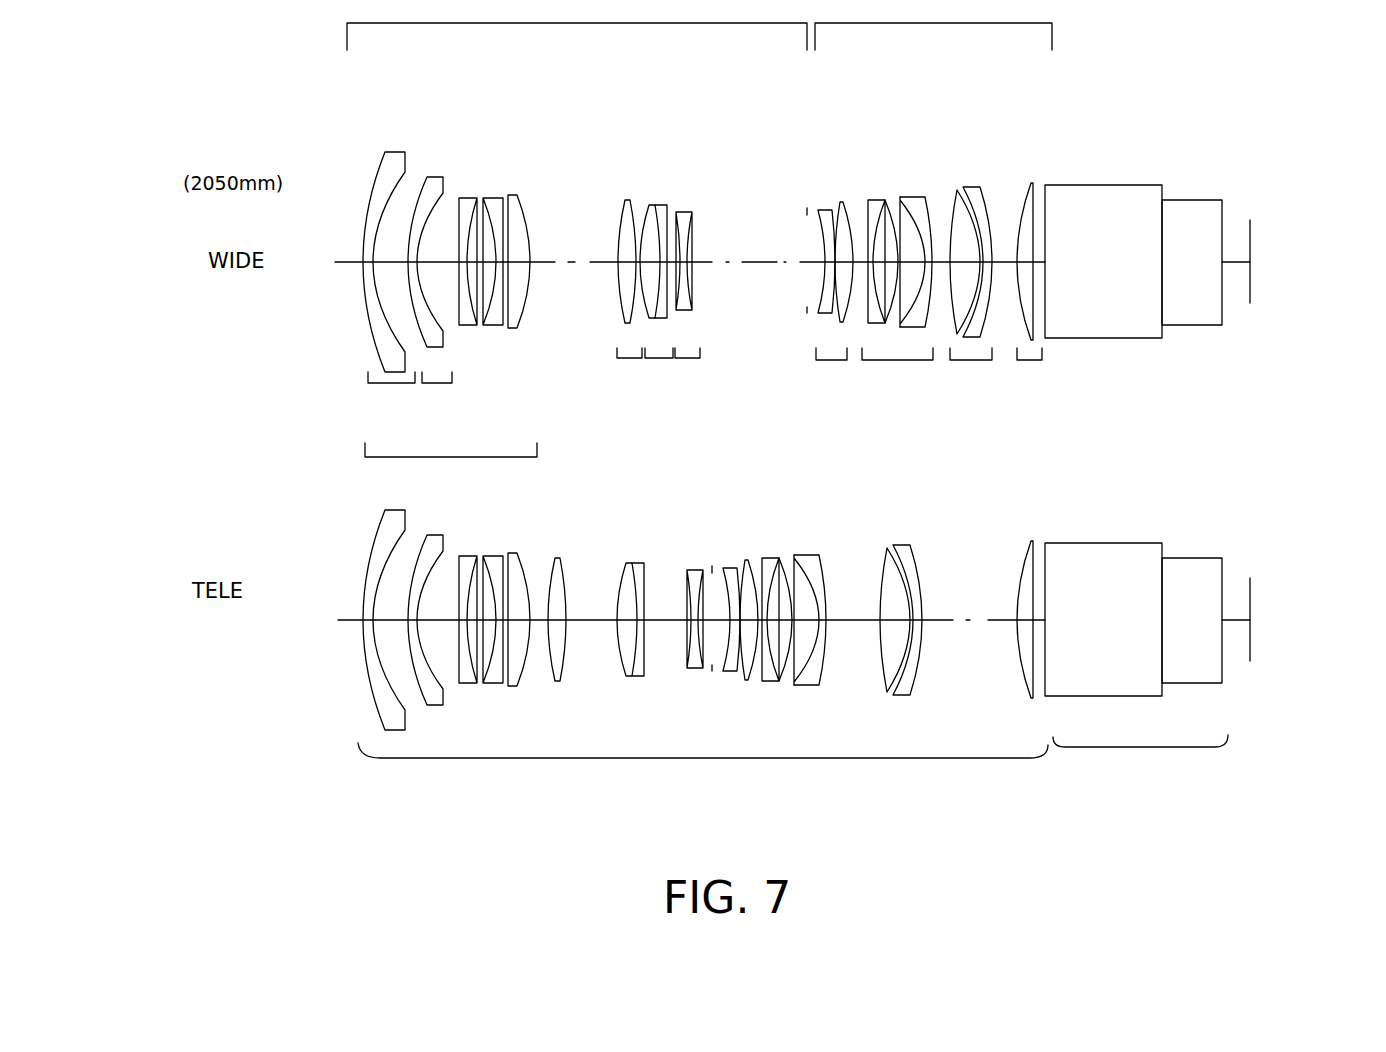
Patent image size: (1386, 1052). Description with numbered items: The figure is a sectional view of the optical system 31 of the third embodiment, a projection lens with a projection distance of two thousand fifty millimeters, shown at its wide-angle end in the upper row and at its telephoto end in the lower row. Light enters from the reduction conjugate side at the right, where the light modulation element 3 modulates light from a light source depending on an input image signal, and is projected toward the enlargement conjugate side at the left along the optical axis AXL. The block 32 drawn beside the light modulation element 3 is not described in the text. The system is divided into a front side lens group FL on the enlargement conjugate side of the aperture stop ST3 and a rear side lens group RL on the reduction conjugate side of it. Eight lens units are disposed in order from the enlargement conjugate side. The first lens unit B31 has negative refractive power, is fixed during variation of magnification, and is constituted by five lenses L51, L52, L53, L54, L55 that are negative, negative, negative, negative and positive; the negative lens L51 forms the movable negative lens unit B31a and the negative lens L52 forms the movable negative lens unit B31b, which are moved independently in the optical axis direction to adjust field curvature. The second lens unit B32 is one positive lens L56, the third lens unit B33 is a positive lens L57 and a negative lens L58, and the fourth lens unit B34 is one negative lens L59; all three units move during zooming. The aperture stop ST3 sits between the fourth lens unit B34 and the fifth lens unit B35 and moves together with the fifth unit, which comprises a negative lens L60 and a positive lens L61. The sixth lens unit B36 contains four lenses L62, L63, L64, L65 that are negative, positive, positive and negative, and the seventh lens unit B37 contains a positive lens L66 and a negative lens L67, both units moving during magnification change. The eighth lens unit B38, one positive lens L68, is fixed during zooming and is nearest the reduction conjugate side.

The negative lens L51 is at (403, 152).
The negative lens L52 is at (442, 177).
The negative lens L53 is at (465, 197).
The negative lens L54 is at (493, 197).
The positive lens L55 is at (515, 197).
The positive lens L56 is at (627, 200).
The positive lens L57 is at (652, 203).
The negative lens L58 is at (662, 205).
The negative lens L59 is at (683, 212).
The aperture stop ST3 is at (807, 208).
The negative lens L60 is at (830, 208).
The positive lens L61 is at (843, 202).
The negative lens L62 is at (880, 200).
The positive lens L63 is at (891, 200).
The positive lens L64 is at (905, 195).
The negative lens L65 is at (923, 195).
The positive lens L66 is at (962, 188).
The negative lens L67 is at (979, 187).
The positive lens L68 is at (1032, 182).
The first lens unit B31 is at (468, 404).
The negative lens unit B31a is at (385, 411).
The negative lens unit B31b is at (445, 392).
The second lens unit B32 is at (595, 414).
The third lens unit B33 is at (662, 389).
The fourth lens unit B34 is at (714, 398).
The fifth lens unit B35 is at (794, 400).
The sixth lens unit B36 is at (864, 379).
The seventh lens unit B37 is at (971, 376).
The eighth lens unit B38 is at (1048, 402).
The front side lens group FL is at (577, 25).
The rear side lens group RL is at (933, 25).
The optical axis AXL is at (352, 262).
The optical system 31 is at (680, 763).
The prism and image sensor block 32 is at (1128, 750).
The light modulation element 3 is at (1253, 592).